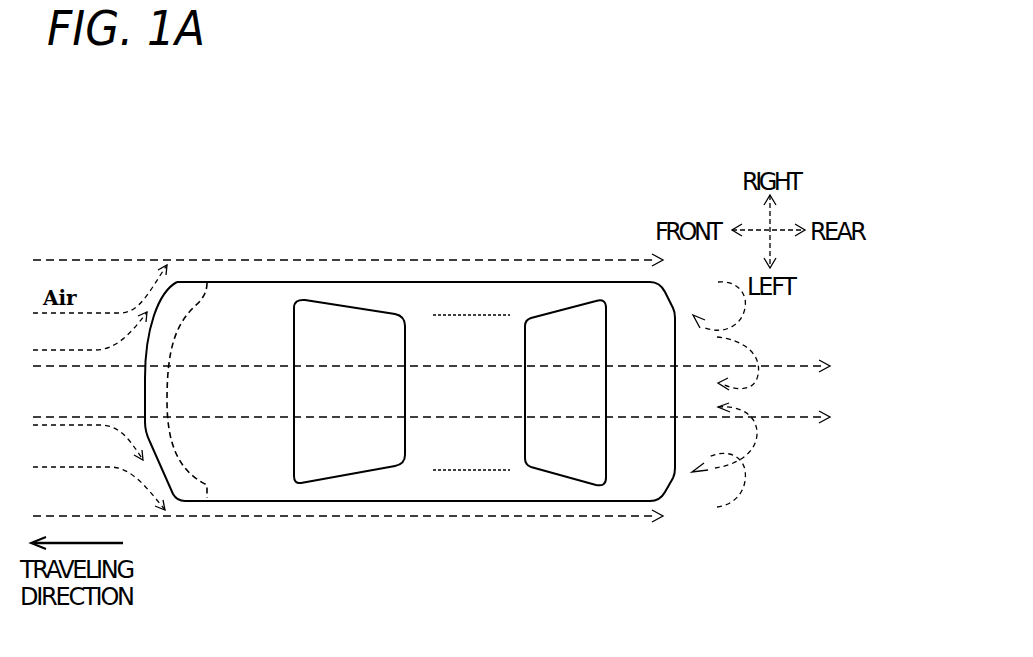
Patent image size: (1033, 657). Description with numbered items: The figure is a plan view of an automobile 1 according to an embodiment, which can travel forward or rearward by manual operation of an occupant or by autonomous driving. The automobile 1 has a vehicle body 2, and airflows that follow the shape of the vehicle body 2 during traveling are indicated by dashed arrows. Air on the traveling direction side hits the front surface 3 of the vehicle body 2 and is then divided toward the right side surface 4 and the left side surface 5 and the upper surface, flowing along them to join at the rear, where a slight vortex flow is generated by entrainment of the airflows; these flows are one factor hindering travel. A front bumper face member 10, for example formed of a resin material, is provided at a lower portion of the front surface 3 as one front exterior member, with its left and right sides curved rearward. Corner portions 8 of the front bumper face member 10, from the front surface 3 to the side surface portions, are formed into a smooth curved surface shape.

The automobile 1 is at (530, 230).
The vehicle body 2 is at (467, 290).
The front surface 3 is at (126, 390).
The right side surface 4 is at (397, 282).
The left side surface 5 is at (400, 503).
The corner portions 8 is at (175, 283).
The front bumper face member 10 is at (157, 323).